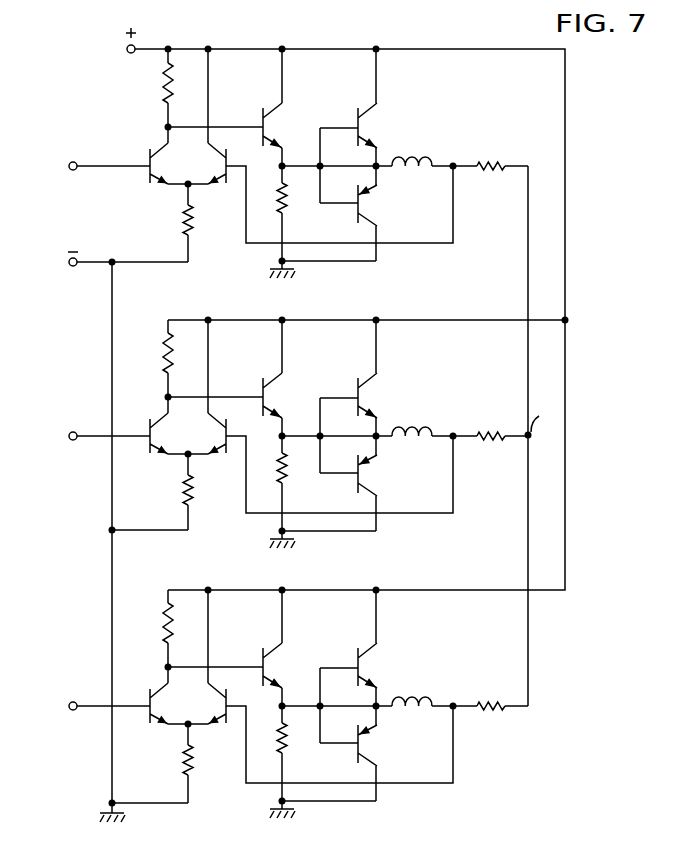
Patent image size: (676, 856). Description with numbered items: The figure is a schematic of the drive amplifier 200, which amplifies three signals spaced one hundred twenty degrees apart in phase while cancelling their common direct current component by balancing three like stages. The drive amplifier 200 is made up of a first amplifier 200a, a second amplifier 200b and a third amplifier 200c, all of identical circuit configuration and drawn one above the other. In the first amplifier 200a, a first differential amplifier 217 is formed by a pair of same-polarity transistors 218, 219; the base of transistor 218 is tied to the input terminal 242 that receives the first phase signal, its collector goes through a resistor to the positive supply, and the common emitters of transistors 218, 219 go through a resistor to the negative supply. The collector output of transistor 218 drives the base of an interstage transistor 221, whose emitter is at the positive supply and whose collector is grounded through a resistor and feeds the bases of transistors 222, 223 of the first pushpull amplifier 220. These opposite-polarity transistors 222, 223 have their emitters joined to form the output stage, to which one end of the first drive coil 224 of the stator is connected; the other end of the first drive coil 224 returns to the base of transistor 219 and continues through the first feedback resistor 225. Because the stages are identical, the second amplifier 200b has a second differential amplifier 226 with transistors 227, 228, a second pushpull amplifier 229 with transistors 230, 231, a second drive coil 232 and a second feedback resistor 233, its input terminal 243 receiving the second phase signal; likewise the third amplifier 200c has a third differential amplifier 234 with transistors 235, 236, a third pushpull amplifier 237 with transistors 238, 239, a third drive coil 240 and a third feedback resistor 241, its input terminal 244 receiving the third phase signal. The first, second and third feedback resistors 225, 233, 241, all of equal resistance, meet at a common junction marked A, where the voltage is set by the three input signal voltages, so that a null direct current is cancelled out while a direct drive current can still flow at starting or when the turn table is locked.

The drive amplifier 200 is at (50, 91).
The first amplifier 200a is at (136, 108).
The second amplifier 200b is at (145, 354).
The third amplifier 200c is at (141, 608).
The first differential amplifier 217 is at (205, 162).
The transistor 218 is at (160, 184).
The transistor 219 is at (218, 184).
The first pushpull amplifier 220 is at (362, 180).
The interstage transistor 221 is at (272, 129).
The transistor 222 is at (372, 124).
The transistor 223 is at (365, 208).
The first drive coil 224 is at (428, 160).
The first feedback resistor 225 is at (492, 174).
The second differential amplifier 226 is at (205, 442).
The transistor 227 is at (160, 454).
The transistor 228 is at (218, 454).
The second pushpull amplifier 229 is at (363, 450).
The NPN output transistor 230 is at (374, 385).
The PNP output transistor 231 is at (365, 478).
The second drive coil 232 is at (427, 433).
The second feedback resistor 233 is at (495, 447).
The third differential amplifier 234 is at (205, 704).
The transistor 235 is at (160, 724).
The transistor 236 is at (218, 724).
The third pushpull amplifier 237 is at (367, 717).
The NPN output transistor 238 is at (365, 668).
The PNP output transistor 239 is at (365, 748).
The third drive coil 240 is at (440, 698).
The third feedback resistor 241 is at (497, 718).
The input terminal 242 is at (90, 152).
The input terminal 243 is at (72, 431).
The input terminal 244 is at (72, 711).